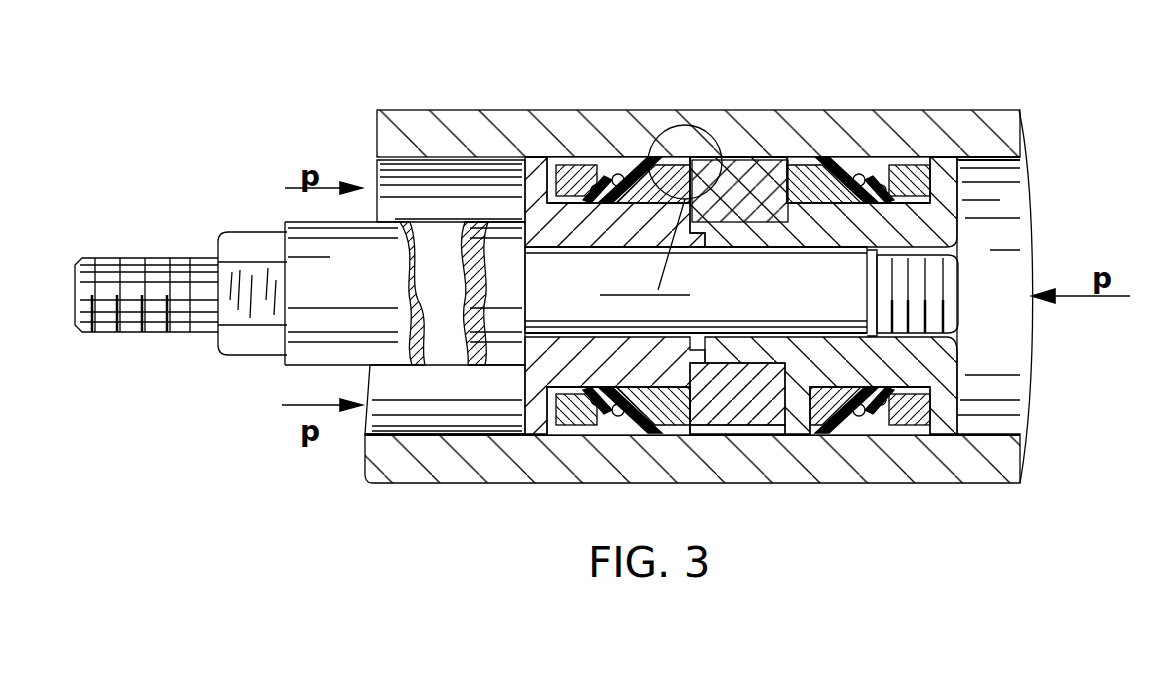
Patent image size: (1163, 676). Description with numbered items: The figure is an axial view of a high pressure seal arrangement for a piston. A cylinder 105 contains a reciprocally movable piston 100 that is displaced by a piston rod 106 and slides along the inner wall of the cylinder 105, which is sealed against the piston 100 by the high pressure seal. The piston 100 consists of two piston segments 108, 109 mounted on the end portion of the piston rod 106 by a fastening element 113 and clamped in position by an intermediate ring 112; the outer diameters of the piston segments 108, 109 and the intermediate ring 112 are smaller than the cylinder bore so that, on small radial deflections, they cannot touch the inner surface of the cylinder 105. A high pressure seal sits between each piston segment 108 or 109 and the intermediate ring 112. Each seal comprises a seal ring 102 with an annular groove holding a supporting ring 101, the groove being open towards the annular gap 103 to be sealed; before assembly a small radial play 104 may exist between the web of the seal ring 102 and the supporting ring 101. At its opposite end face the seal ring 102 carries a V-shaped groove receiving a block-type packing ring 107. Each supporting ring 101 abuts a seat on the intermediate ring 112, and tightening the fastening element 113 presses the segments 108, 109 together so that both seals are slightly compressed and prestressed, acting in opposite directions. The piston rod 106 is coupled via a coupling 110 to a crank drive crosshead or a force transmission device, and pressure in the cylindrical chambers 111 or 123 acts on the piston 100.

The piston 100 is at (958, 382).
The supporting ring 101 is at (700, 160).
The seal ring 102 is at (635, 163).
The annular gap 103 is at (682, 126).
The radial play 104 is at (712, 155).
The cylinder 105 is at (395, 118).
The piston rod 106 is at (562, 310).
The packing ring 107 is at (600, 158).
The piston segment 108 is at (943, 207).
The piston segment 109 is at (533, 173).
The coupling 110 is at (242, 248).
The cylindrical chamber 111 is at (987, 408).
The intermediate ring 112 is at (743, 413).
The fastening element 113 is at (948, 285).
The cylindrical chamber 123 is at (423, 403).